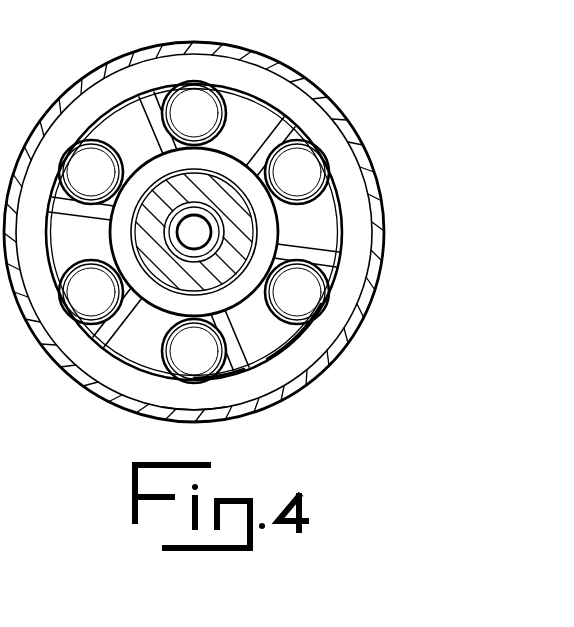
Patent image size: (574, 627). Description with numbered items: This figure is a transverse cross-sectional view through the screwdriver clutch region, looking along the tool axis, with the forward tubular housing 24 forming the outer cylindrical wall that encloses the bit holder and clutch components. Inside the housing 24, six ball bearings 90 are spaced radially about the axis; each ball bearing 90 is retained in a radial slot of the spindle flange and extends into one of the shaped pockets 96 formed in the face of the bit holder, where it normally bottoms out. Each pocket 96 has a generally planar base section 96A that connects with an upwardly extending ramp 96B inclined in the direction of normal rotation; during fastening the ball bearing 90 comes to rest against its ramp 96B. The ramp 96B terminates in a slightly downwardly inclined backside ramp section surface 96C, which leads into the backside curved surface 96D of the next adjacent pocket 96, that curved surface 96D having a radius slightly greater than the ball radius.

The forward tubular housing 24 is at (305, 83).
The ball bearings 90 is at (294, 168).
The shaped pockets 96 is at (250, 117).
The planar base section 96A is at (293, 332).
The ramp 96B is at (250, 352).
The backside ramp section surface 96C is at (232, 373).
The backside curved surface 96D is at (185, 417).